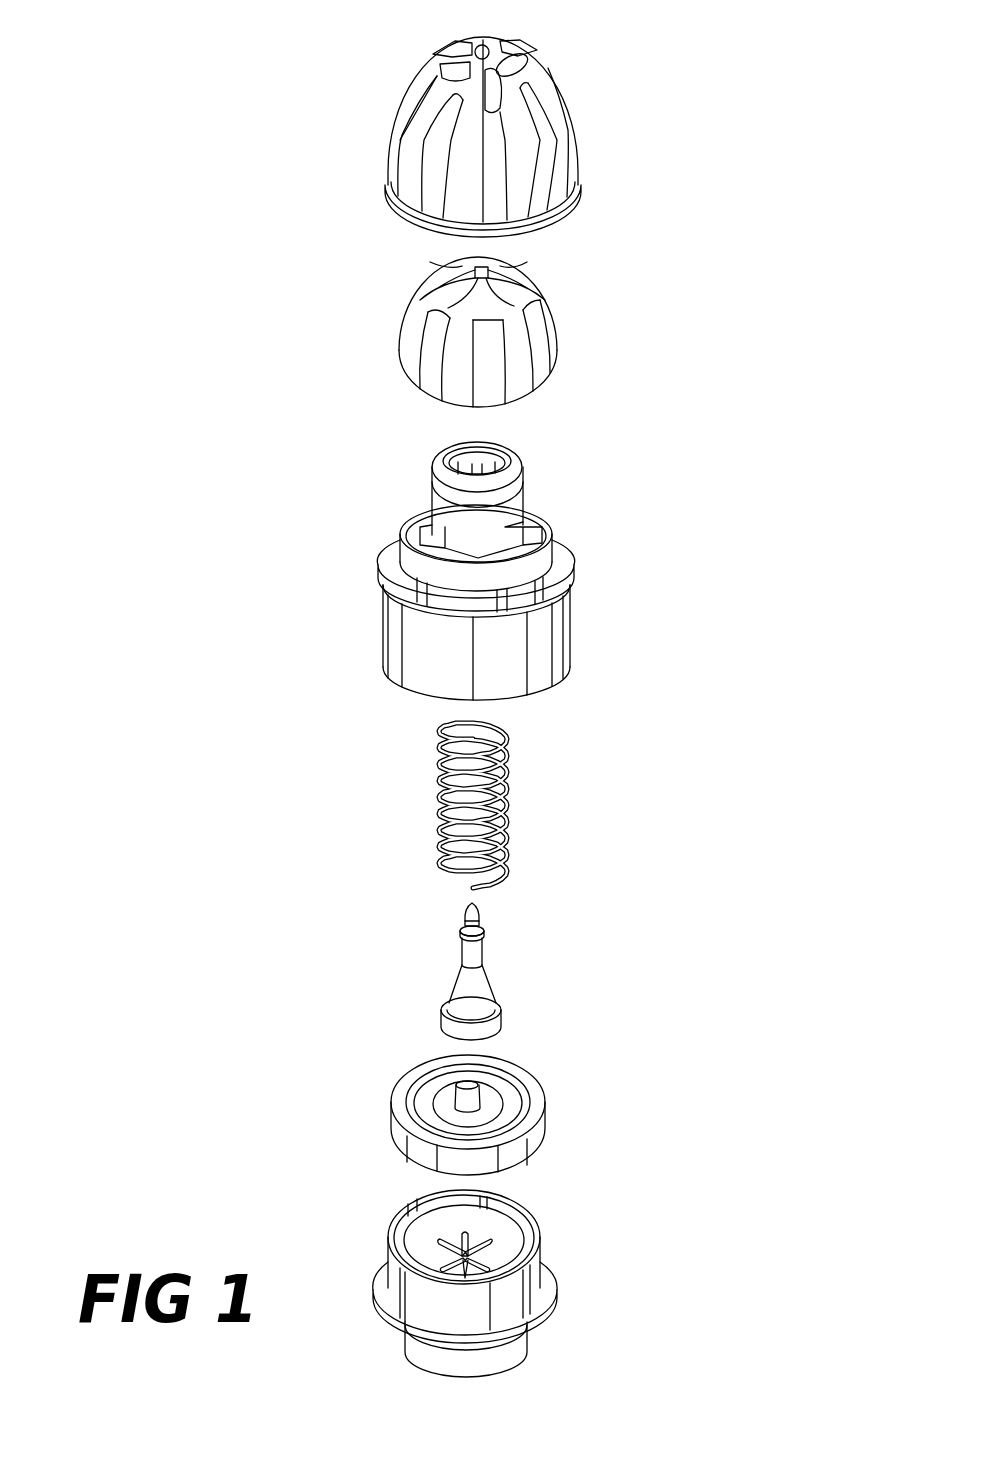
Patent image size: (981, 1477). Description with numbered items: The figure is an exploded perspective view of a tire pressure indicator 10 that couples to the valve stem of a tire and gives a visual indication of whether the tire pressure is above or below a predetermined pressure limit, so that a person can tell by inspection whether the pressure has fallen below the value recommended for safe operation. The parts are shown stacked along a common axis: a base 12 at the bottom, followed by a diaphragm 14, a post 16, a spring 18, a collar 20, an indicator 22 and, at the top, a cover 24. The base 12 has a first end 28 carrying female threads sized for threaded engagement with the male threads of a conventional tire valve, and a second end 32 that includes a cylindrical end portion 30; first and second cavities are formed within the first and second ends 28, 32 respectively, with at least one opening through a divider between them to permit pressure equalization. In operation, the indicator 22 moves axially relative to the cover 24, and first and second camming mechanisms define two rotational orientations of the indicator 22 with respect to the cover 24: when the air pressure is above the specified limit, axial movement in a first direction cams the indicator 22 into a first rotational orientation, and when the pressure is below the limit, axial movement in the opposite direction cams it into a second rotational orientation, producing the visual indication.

The tire pressure indicator 10 is at (667, 181).
The base 12 is at (530, 1278).
The diaphragm 14 is at (530, 1080).
The post 16 is at (478, 949).
The spring 18 is at (505, 765).
The collar 20 is at (555, 622).
The indicator 22 is at (538, 295).
The cover 24 is at (548, 72).
The first end 28 is at (525, 1350).
The cylindrical end portion 30 is at (380, 1252).
The second end 32 is at (547, 1208).